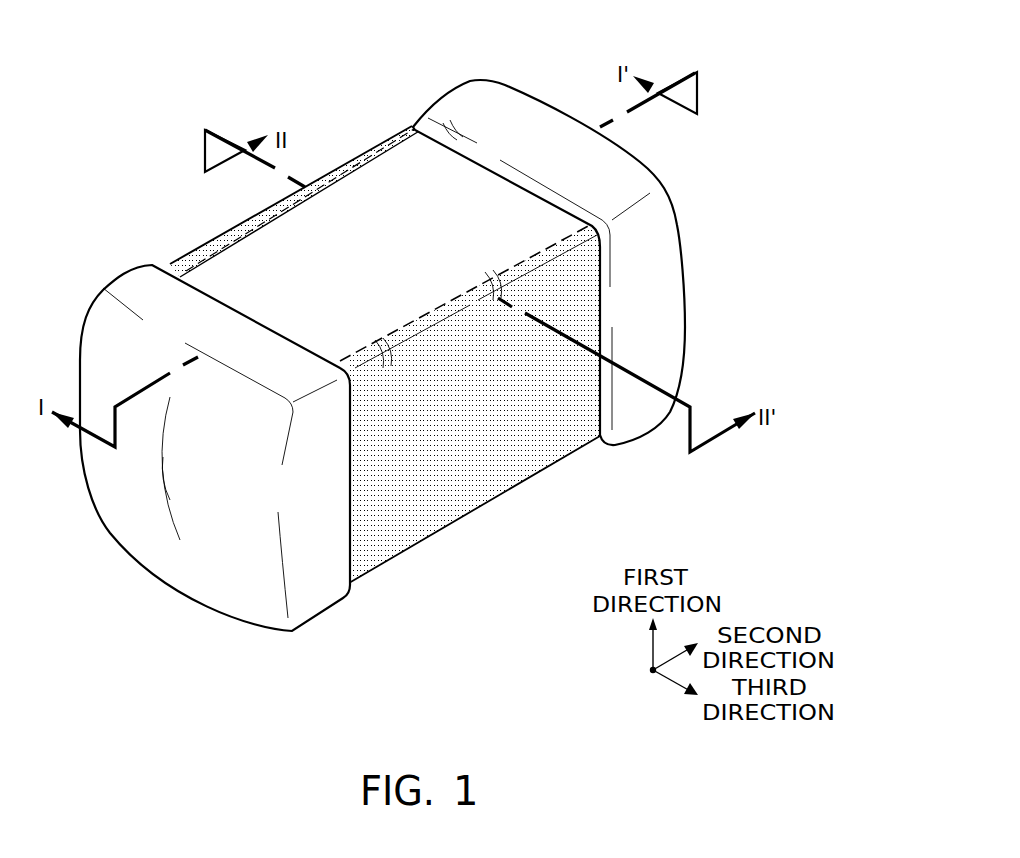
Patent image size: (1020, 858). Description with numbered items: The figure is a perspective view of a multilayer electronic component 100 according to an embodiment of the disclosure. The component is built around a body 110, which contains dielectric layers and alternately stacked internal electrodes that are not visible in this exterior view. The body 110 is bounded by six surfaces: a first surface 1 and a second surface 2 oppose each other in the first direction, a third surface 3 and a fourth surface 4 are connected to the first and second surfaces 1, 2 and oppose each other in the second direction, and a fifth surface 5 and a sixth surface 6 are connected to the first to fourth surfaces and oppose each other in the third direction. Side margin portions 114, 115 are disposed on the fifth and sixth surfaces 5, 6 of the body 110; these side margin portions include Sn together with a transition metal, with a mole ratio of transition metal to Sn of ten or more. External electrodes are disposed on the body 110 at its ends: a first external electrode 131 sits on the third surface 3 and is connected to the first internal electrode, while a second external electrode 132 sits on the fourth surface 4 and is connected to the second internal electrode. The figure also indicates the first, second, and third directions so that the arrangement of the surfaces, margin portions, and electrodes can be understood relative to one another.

The multilayer electronic component 100 is at (262, 22).
The body 110 is at (375, 185).
The side margin portion 114 is at (323, 185).
The side margin portion 115 is at (473, 485).
The first external electrode 131 is at (133, 280).
The second external electrode 132 is at (457, 95).
The first surface 1 is at (418, 550).
The second surface 2 is at (402, 158).
The third surface 3 is at (126, 506).
The fourth surface 4 is at (524, 106).
The fifth surface 5 is at (186, 249).
The sixth surface 6 is at (518, 463).